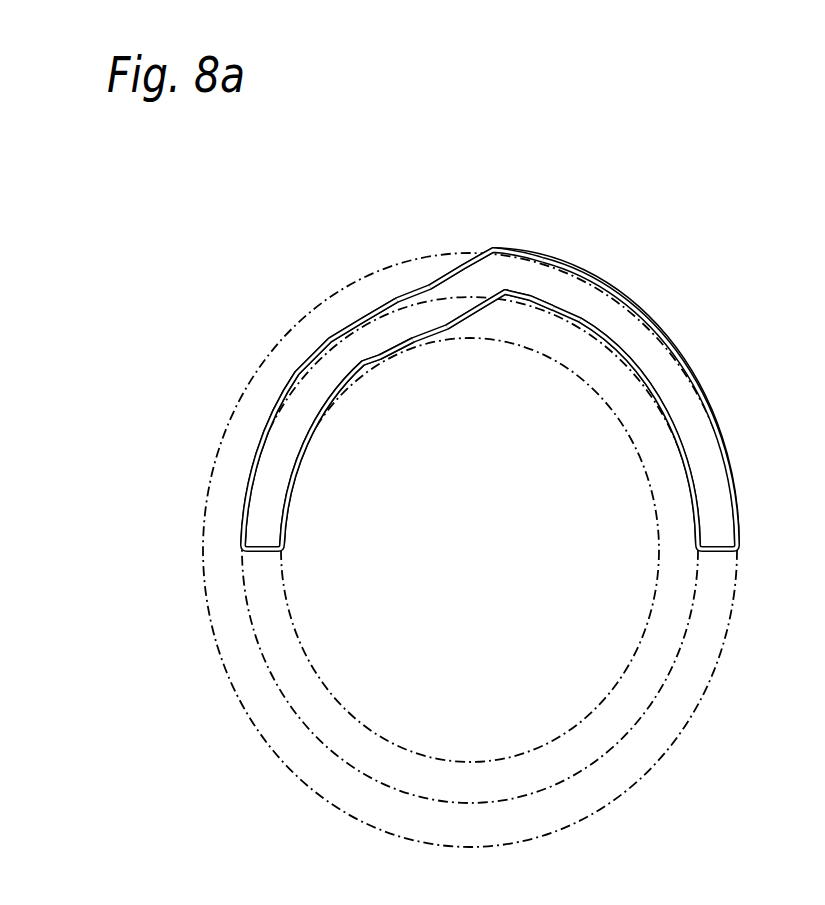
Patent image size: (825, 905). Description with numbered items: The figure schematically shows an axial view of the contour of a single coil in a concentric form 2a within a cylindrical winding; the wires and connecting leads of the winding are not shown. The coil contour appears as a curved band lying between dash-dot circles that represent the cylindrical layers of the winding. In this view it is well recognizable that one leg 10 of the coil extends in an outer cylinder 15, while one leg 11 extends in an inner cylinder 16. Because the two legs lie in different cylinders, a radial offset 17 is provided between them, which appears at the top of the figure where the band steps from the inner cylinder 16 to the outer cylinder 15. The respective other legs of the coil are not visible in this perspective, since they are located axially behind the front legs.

The single coil in a concentric form 2a is at (543, 257).
The leg 10 is at (638, 355).
The leg 11 is at (337, 365).
The outer cylinder 15 is at (470, 554).
The inner cylinder 16 is at (470, 553).
The radial offset 17 is at (467, 290).